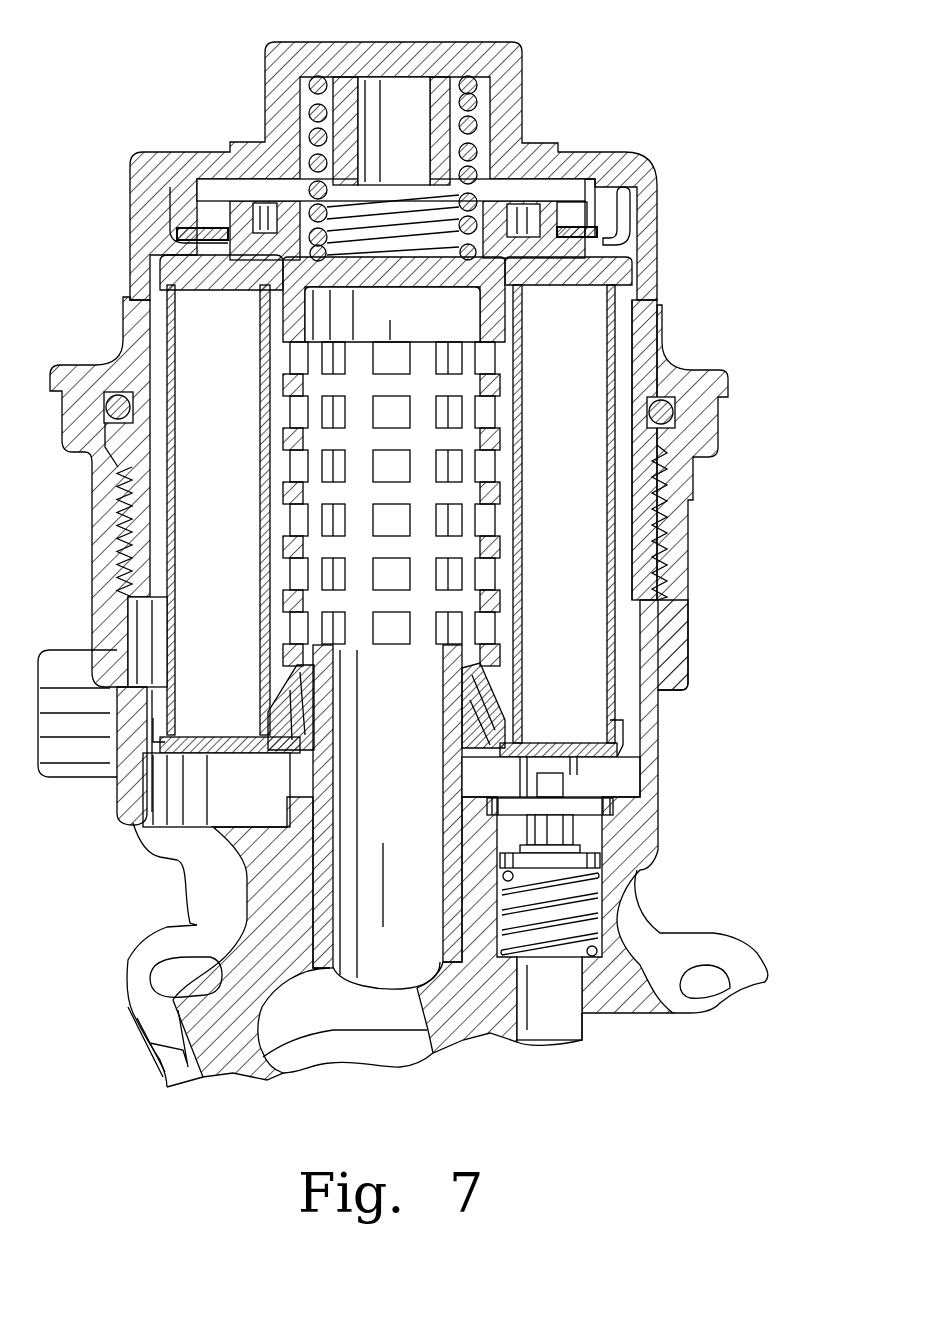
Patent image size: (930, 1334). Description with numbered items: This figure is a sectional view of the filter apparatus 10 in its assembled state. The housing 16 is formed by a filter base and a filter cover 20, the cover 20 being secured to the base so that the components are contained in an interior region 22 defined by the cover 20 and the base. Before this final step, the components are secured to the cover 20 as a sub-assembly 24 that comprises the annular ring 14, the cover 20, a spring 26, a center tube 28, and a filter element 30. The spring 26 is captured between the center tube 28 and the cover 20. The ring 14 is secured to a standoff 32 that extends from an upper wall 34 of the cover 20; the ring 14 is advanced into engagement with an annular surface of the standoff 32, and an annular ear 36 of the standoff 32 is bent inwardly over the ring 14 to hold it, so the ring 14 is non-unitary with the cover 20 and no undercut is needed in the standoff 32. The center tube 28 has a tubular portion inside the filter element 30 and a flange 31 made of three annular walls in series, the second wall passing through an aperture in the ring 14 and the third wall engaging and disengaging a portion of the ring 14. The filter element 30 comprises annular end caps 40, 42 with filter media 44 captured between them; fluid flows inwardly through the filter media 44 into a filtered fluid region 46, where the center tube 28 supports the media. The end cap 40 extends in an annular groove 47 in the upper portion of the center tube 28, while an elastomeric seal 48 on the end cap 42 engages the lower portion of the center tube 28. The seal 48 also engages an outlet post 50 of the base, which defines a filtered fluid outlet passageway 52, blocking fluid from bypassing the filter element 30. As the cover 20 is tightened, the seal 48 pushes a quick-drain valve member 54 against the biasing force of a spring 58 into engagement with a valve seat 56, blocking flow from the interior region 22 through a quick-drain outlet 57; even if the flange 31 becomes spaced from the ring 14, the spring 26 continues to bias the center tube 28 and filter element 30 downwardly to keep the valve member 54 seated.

The filter apparatus 10 is at (157, 86).
The annular ring 14 is at (560, 217).
The housing 16 is at (724, 430).
The filter cover 20 is at (548, 141).
The interior region 22 is at (640, 634).
The sub-assembly 24 is at (661, 271).
The spring 26 is at (480, 126).
The center tube 28 is at (503, 388).
The filter element 30 is at (626, 382).
The flange 31 is at (586, 180).
The standoff 32 is at (609, 207).
The upper wall 34 is at (572, 162).
The annular ear 36 is at (631, 214).
The end cap 40 is at (206, 252).
The end cap 42 is at (196, 733).
The filter media 44 is at (262, 464).
The filtered fluid region 46 is at (272, 484).
The annular groove 47 is at (256, 272).
The elastomeric seal 48 is at (538, 744).
The outlet post 50 is at (446, 704).
The filtered fluid outlet passageway 52 is at (442, 751).
The quick-drain valve member 54 is at (574, 761).
The valve seat 56 is at (520, 957).
The quick-drain outlet 57 is at (575, 1035).
The spring 58 is at (638, 872).